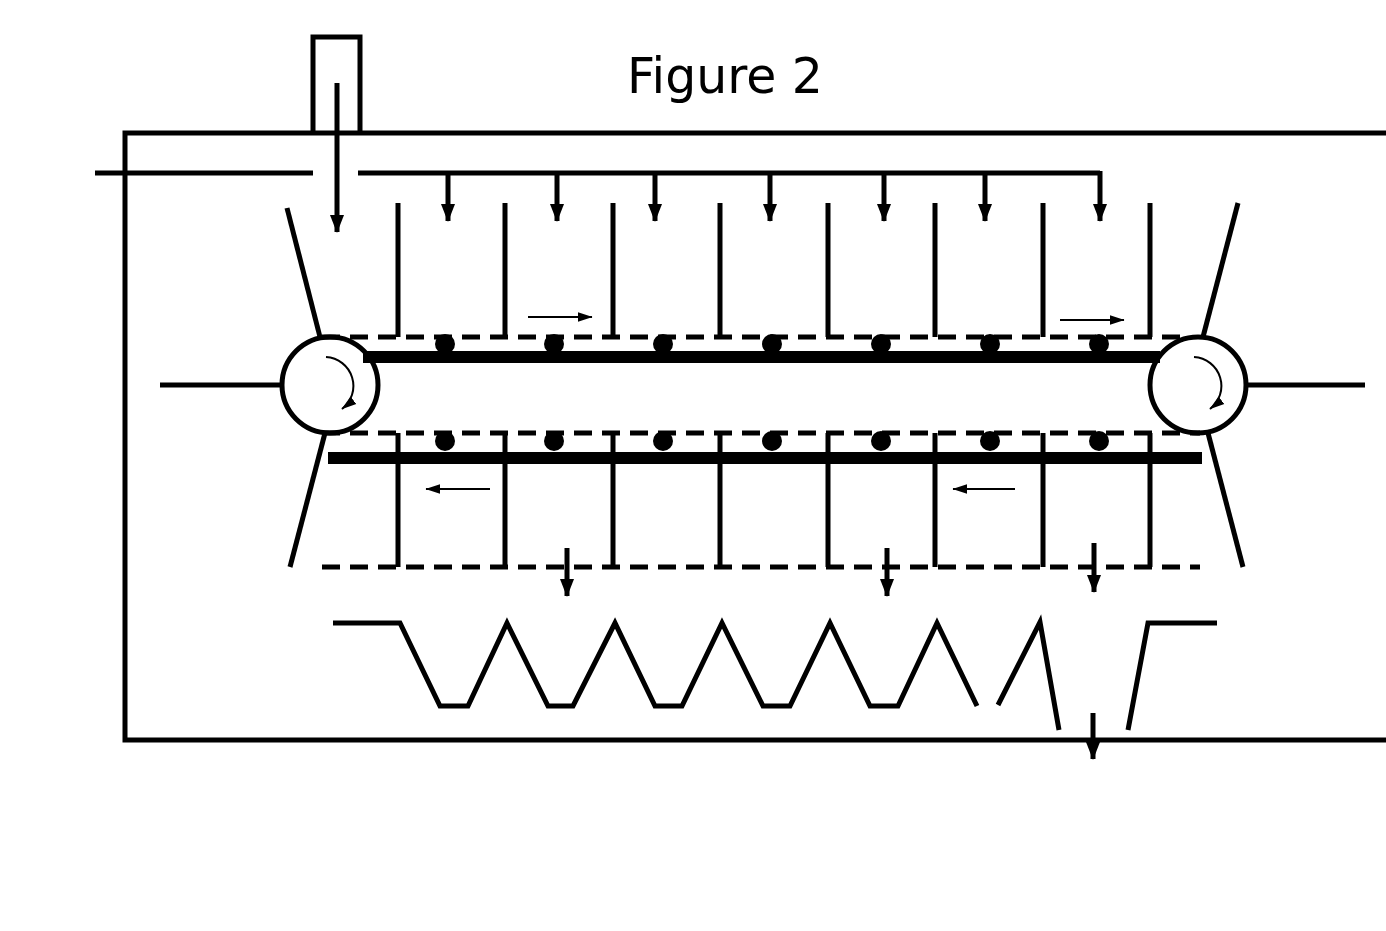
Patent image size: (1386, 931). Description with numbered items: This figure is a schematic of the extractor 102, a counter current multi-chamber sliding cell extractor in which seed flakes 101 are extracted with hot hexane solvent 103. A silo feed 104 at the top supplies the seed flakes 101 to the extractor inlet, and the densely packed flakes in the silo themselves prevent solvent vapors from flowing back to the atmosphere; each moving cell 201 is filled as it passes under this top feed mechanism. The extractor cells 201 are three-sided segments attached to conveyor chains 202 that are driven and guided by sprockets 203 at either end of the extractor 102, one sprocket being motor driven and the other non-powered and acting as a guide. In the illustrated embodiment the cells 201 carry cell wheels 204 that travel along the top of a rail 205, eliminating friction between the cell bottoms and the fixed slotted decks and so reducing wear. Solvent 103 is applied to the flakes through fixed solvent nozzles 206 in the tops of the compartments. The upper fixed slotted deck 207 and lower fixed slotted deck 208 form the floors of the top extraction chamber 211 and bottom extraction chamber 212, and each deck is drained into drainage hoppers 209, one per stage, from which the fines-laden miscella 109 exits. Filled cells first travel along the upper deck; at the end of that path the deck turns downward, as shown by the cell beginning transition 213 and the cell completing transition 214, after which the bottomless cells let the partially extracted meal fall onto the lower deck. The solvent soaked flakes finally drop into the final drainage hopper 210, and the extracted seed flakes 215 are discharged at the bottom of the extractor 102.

The seed flakes 101 is at (336, 176).
The extractor 102 is at (755, 409).
The solvent 103 is at (566, 177).
The silo feed 104 is at (315, 86).
The miscella 109 is at (830, 585).
The extractor cells 201 is at (774, 385).
The conveyor chains 202 is at (761, 372).
The sprockets 203 is at (762, 385).
The cell wheels 204 is at (765, 407).
The rail 205 is at (775, 408).
The fixed solvent nozzles 206 is at (768, 211).
The upper fixed slotted deck 207 is at (772, 381).
The lower fixed slotted deck 208 is at (761, 581).
The drainage hoppers 209 is at (655, 664).
The final drainage hopper 210 is at (1107, 676).
The top extraction chamber 211 is at (248, 283).
The bottom extraction chamber 212 is at (250, 504).
The cell beginning transition from upper extraction chamber to lower extraction cham 213 is at (1256, 270).
The cell completing transition from upper extraction chamber to lower extraction cha 214 is at (1255, 500).
The extracted seed flakes 215 is at (1092, 754).